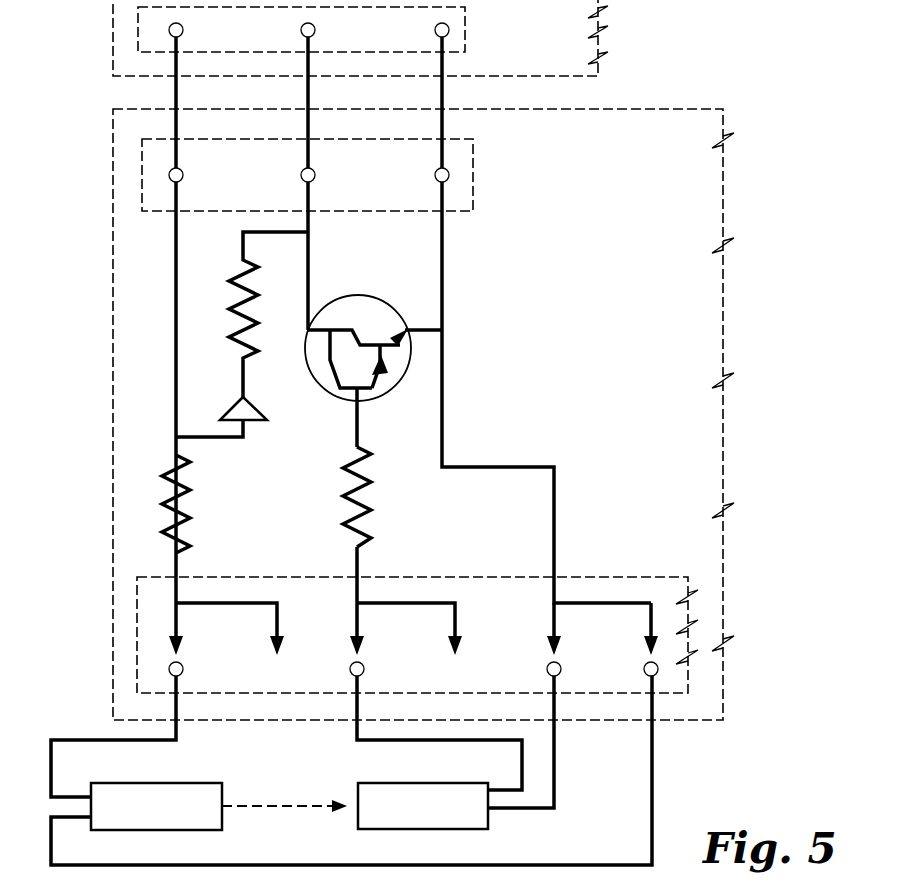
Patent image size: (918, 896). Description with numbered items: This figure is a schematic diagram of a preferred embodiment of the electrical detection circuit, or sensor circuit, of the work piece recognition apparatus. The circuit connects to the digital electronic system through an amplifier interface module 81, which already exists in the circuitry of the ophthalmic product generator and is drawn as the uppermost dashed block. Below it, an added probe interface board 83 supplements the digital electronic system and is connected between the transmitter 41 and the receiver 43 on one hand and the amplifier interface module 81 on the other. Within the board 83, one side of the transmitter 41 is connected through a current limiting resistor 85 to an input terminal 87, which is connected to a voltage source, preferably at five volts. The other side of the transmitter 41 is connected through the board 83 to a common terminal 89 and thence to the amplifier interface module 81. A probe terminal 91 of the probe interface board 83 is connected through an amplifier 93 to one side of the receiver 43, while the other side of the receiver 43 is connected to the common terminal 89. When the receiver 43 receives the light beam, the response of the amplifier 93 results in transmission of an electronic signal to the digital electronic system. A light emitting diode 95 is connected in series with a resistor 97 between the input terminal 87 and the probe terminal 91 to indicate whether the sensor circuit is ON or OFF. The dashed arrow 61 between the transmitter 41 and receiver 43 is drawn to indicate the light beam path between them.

The amplifier interface module 81 is at (560, 43).
The probe interface board 83 is at (140, 262).
The input terminal 87 is at (183, 172).
The probe terminal 91 is at (315, 172).
The common terminal 89 is at (449, 172).
The resistor 97 is at (230, 282).
The light emitting diode 95 is at (247, 415).
The amplifier 93 is at (397, 386).
The current limiting resistor 85 is at (191, 518).
The signal path 61 is at (322, 800).
The transmitter 41 is at (195, 808).
The receiver 43 is at (458, 812).